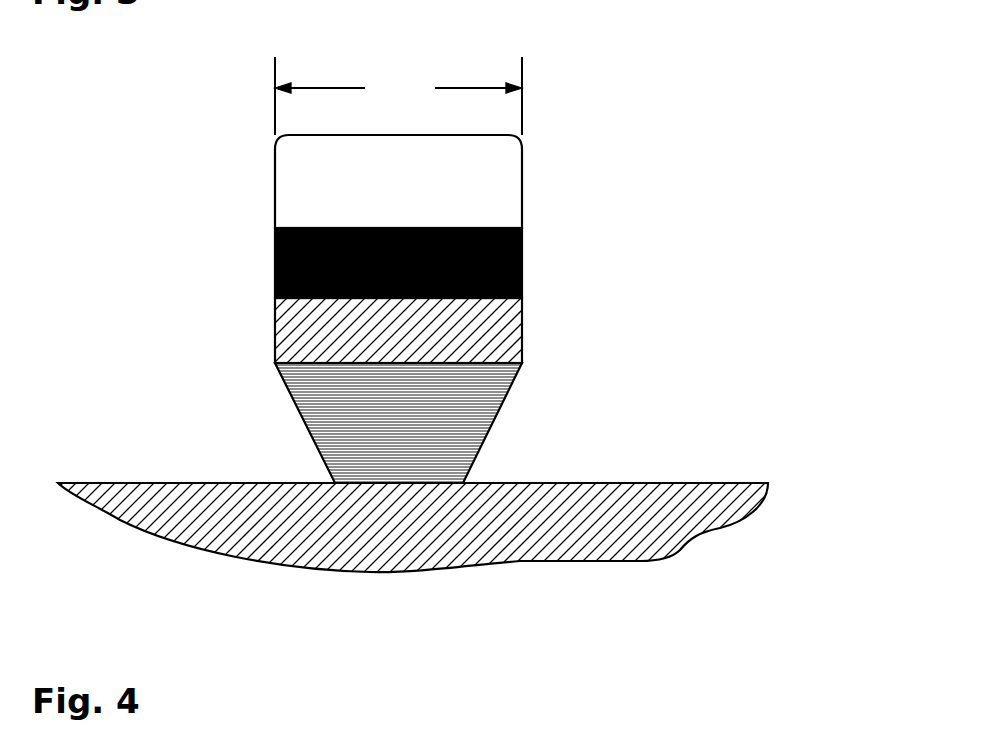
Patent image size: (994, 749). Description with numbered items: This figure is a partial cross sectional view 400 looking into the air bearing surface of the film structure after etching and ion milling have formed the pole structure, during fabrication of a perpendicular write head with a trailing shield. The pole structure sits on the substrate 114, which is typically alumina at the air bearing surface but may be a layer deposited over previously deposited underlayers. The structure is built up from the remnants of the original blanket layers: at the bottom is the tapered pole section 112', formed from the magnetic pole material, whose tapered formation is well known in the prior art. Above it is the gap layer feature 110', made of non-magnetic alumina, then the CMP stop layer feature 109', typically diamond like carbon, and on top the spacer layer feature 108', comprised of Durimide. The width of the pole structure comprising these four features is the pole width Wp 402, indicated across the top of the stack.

The partial cross sectional view 400 is at (643, 253).
The pole structure width Wp 402 is at (411, 68).
The spacer layer feature 108' is at (398, 181).
The CMP stop layer feature 109' is at (398, 263).
The gap layer feature 110' is at (398, 330).
The tapered pole section 112' is at (398, 423).
The substrate 114 is at (447, 538).